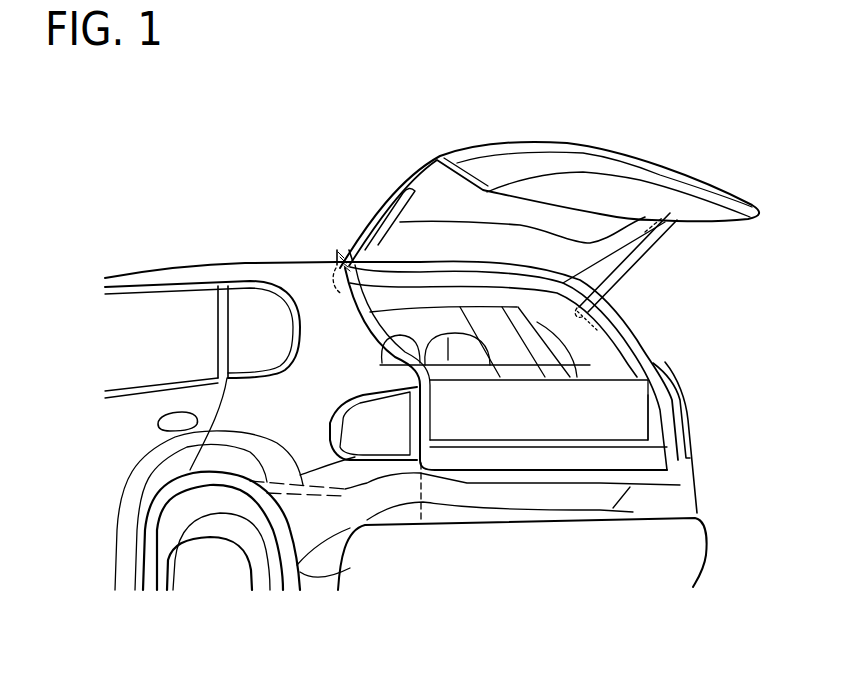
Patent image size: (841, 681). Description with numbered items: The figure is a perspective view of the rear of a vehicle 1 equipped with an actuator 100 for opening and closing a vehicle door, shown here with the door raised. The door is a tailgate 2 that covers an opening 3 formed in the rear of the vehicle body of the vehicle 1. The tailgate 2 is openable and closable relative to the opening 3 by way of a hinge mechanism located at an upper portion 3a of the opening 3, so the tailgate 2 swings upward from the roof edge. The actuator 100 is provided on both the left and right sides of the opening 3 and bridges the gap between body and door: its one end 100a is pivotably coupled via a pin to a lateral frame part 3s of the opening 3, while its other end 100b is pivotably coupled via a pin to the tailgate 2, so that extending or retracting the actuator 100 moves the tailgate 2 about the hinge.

The vehicle 1 is at (243, 258).
The tailgate 2 is at (700, 178).
The opening 3 is at (617, 372).
The upper portion of the opening 3a is at (336, 262).
The lateral frame part of the opening 3s is at (347, 271).
The actuator for opening/closing a vehicle door 100 is at (626, 270).
The one end of the actuator 100a is at (597, 330).
The other end of the actuator 100b is at (670, 232).